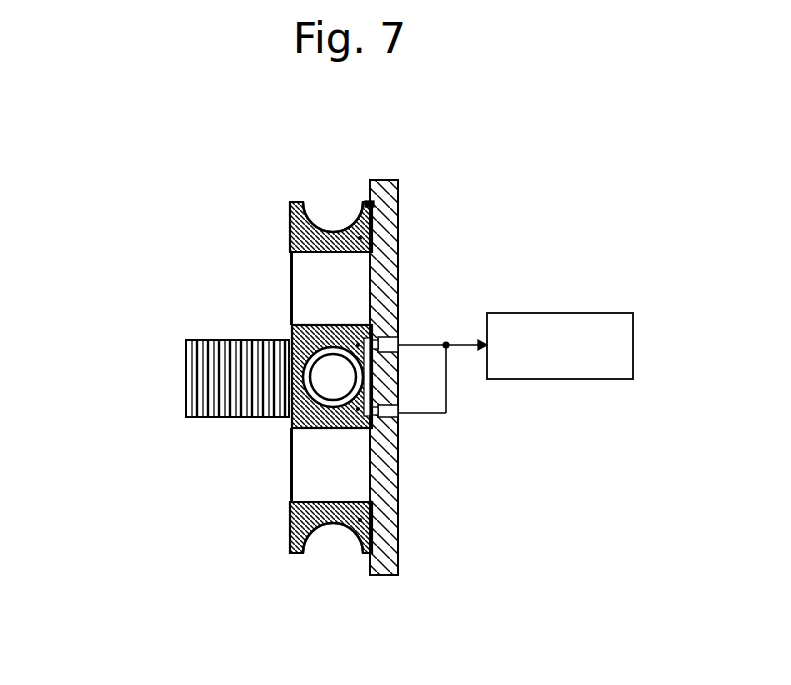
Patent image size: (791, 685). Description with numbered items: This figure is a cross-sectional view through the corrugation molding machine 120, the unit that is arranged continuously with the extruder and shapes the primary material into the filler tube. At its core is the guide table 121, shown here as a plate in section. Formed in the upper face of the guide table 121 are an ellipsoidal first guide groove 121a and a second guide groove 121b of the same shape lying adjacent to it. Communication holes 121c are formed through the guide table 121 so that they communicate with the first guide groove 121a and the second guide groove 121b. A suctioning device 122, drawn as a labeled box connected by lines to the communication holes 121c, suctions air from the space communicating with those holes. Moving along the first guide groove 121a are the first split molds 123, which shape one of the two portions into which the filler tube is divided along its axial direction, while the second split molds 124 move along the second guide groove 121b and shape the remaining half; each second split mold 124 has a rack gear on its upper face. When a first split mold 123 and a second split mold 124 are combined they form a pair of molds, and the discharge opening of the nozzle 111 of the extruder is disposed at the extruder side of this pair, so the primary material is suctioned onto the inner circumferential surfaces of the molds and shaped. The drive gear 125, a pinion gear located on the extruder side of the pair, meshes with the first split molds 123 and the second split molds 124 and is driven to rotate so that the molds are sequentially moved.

The corrugation molding machine 120 is at (553, 207).
The guide table 121 is at (386, 180).
The first guide groove 121a is at (362, 208).
The second guide groove 121b is at (372, 545).
The communication holes 121c is at (390, 343).
The suctioning device 122 is at (598, 313).
The first split molds 123 is at (290, 217).
The second split molds 124 is at (291, 429).
The drive gear 125 is at (186, 352).
The nozzle 111 is at (333, 355).